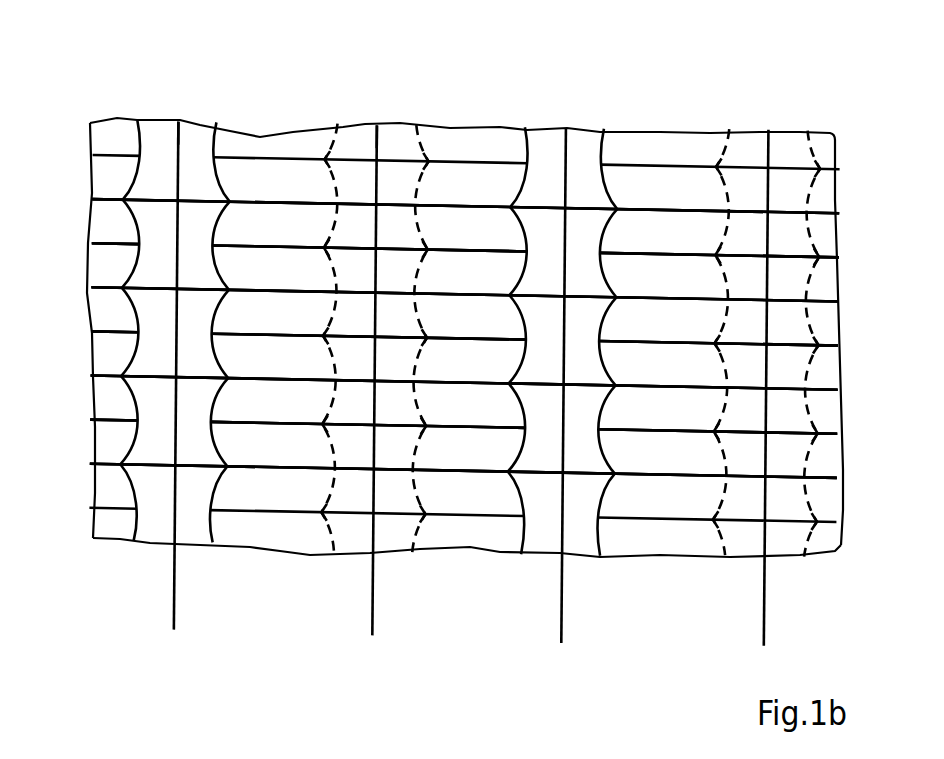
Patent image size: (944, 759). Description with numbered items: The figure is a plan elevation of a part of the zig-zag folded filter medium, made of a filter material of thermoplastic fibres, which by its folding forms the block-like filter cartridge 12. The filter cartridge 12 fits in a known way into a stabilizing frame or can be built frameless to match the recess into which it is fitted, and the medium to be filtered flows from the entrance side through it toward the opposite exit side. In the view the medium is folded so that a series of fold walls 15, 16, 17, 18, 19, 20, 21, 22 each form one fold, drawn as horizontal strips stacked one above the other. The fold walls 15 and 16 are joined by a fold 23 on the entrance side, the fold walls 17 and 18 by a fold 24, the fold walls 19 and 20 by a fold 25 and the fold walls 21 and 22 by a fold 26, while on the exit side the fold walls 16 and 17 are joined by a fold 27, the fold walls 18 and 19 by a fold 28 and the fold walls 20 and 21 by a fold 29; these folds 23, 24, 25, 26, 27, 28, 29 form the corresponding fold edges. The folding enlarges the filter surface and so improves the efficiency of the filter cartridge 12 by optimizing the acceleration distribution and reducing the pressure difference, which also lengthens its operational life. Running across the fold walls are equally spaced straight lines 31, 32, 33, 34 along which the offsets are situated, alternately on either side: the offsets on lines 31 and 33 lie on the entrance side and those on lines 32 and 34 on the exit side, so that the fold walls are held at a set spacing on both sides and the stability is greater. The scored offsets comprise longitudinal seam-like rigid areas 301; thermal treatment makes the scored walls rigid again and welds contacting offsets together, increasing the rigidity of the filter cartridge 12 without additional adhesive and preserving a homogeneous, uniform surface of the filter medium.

The filter cartridge 12 is at (541, 77).
The fold wall 15 is at (102, 177).
The fold wall 16 is at (102, 221).
The fold wall 17 is at (102, 264).
The fold wall 18 is at (102, 309).
The fold wall 19 is at (102, 352).
The fold wall 20 is at (102, 397).
The fold wall 21 is at (102, 442).
The fold wall 22 is at (102, 486).
The fold 23 is at (826, 216).
The fold 24 is at (826, 304).
The fold 25 is at (826, 393).
The fold 26 is at (826, 481).
The fold 27 is at (826, 254).
The fold 28 is at (826, 343).
The fold 29 is at (826, 431).
The straight line 31 is at (175, 616).
The straight line 32 is at (373, 622).
The straight line 33 is at (562, 626).
The straight line 34 is at (764, 631).
The seam-like rigid area 301 is at (372, 145).